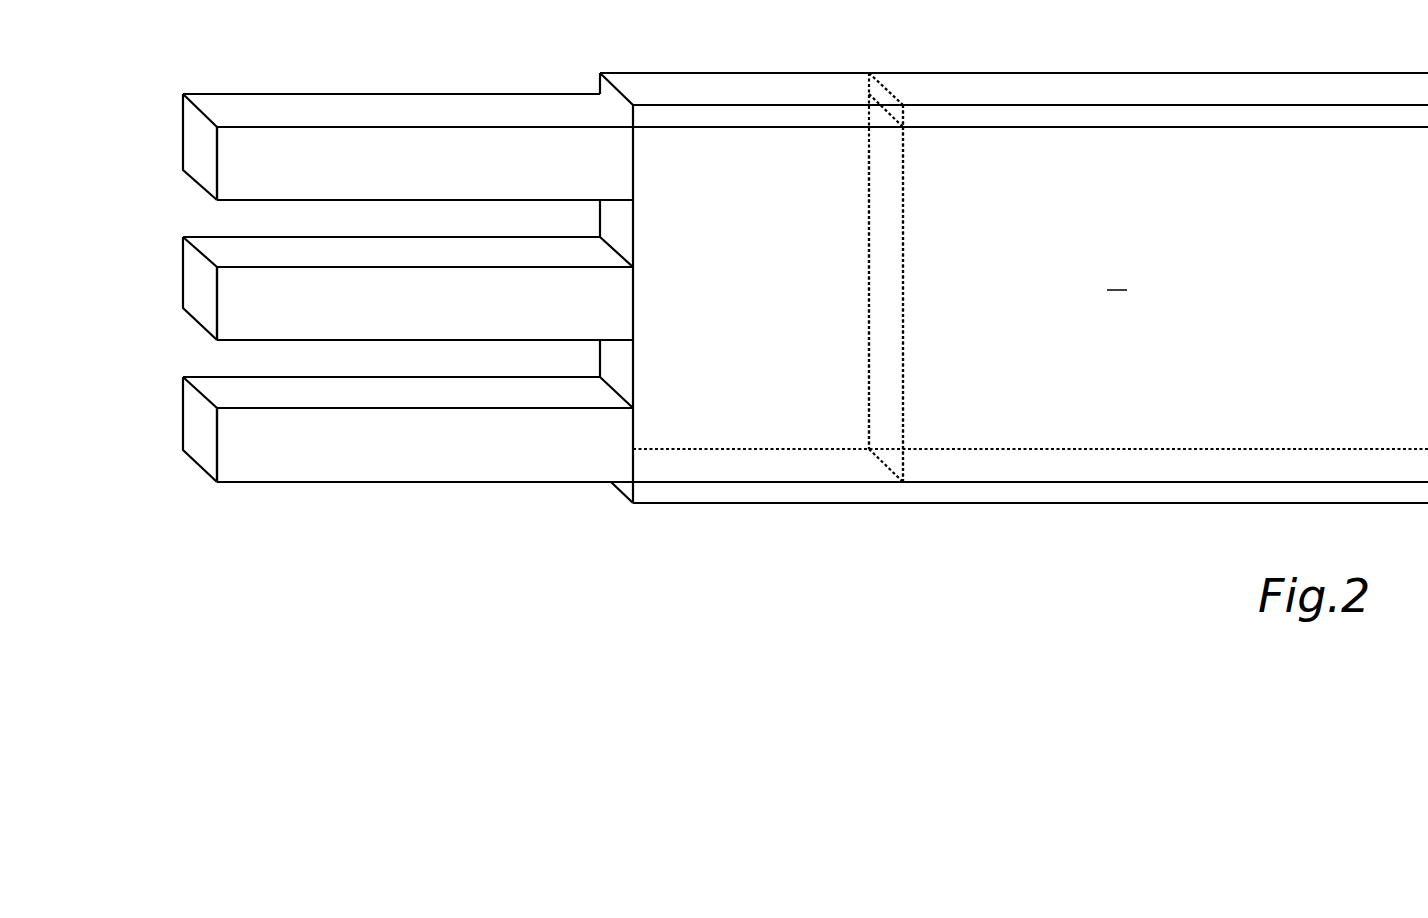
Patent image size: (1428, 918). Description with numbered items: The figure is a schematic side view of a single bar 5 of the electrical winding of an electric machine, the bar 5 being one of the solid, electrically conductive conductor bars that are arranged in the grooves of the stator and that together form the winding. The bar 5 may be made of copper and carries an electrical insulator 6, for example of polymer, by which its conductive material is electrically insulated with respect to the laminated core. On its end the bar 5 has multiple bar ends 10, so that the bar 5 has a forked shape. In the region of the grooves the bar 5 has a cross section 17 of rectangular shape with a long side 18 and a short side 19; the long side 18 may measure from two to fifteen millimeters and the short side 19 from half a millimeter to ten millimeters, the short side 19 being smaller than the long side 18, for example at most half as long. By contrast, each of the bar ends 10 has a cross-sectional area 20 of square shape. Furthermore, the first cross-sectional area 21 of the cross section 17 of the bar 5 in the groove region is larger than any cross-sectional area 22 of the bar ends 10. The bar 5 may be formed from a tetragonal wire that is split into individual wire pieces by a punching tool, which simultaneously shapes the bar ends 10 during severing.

The bar 5 is at (1161, 428).
The electrical insulator 6 is at (1005, 116).
The bar end 10 is at (388, 102).
The cross section 17 is at (906, 197).
The long side 18 is at (903, 340).
The short side 19 is at (889, 465).
The cross-sectional area 20 is at (191, 132).
The first cross-sectional area 21 is at (894, 236).
The cross-sectional area 22 is at (207, 157).